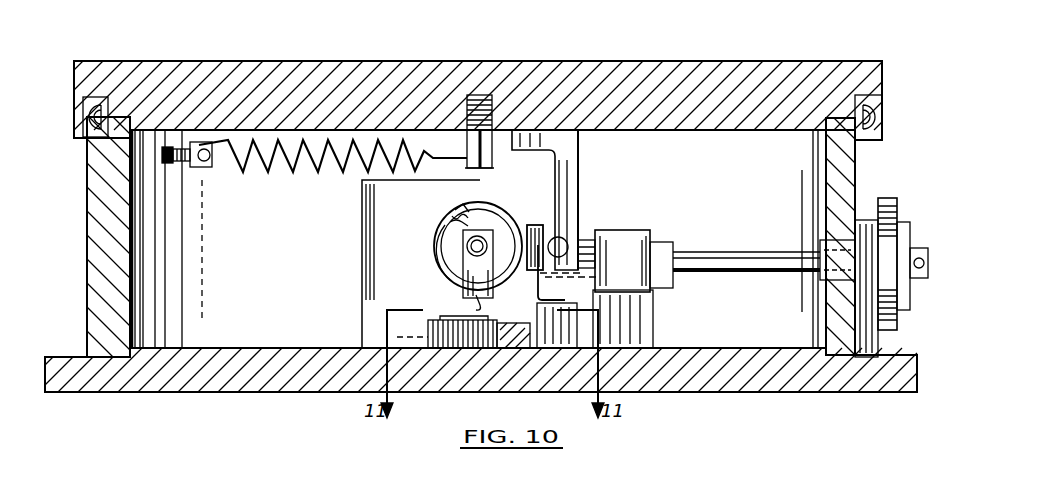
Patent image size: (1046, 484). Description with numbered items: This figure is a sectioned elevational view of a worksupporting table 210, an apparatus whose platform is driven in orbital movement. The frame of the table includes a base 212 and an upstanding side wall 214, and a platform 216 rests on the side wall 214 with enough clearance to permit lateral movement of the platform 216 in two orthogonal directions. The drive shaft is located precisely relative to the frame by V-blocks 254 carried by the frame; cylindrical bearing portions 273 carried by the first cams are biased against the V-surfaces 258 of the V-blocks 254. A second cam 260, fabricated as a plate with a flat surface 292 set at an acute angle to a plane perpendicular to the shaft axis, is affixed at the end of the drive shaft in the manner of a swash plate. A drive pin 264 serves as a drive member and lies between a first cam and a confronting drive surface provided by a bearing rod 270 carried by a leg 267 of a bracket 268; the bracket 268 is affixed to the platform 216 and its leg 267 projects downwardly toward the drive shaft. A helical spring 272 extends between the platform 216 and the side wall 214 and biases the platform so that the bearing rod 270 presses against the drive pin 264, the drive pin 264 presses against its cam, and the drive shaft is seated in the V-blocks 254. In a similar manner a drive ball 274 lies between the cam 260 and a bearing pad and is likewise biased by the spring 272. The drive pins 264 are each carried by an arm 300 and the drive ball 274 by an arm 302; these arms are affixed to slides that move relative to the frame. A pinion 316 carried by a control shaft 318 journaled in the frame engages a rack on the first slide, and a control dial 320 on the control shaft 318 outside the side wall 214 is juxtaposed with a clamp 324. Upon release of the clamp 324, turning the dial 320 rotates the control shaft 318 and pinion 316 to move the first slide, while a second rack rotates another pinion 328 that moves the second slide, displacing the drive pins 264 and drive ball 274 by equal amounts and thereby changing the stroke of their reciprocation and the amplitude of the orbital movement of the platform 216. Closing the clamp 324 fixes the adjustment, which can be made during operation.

The worksupporting table 210 is at (481, 216).
The base 212 is at (160, 378).
The side wall 214 is at (98, 199).
The platform 216 is at (258, 47).
The V-blocks 254 is at (372, 257).
The V-surfaces 258 is at (473, 197).
The second cam 260 is at (502, 208).
The drive pin 264 is at (560, 233).
The leg 267 is at (564, 166).
The bracket 268 is at (579, 139).
The bearing rod 270 is at (568, 239).
The helical spring 272 is at (263, 170).
The cylindrical bearing portions 273 is at (453, 216).
The drive ball 274 is at (477, 244).
The flat surface 292 is at (463, 211).
The arm 300 is at (540, 273).
The arm 302 is at (469, 266).
The pinion 316 is at (596, 227).
The control shaft 318 is at (794, 238).
The control dial 320 is at (888, 200).
The clamp 324 is at (903, 232).
The pinion 328 is at (466, 348).